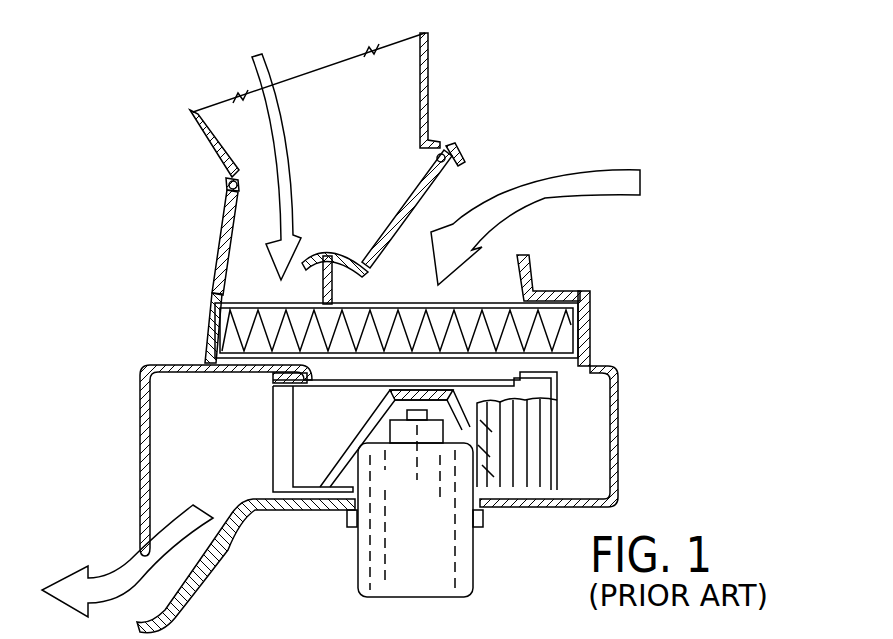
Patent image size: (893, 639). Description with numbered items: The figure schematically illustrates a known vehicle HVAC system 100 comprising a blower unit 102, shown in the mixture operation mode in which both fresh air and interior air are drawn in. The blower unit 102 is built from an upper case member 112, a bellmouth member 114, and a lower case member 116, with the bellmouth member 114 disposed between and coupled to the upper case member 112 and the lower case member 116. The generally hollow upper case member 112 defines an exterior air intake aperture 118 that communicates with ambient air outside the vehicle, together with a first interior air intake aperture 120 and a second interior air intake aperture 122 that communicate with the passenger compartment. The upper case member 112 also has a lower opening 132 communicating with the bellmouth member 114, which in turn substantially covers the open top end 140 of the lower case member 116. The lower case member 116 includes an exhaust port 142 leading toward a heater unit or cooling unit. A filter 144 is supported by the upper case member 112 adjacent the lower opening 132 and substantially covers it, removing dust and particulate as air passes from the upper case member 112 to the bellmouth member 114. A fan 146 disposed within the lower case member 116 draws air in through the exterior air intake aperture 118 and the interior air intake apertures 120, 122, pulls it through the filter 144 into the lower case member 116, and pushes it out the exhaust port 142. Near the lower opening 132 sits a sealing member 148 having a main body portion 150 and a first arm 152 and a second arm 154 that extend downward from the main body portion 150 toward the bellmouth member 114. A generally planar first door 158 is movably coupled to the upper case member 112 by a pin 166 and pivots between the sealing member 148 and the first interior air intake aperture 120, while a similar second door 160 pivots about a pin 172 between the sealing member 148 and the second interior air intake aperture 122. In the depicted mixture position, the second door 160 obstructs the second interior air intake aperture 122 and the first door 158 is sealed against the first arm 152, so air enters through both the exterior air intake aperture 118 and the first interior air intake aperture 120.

The vehicle HVAC system 100 is at (627, 118).
The blower unit 102 is at (634, 398).
The upper case member 112 is at (428, 78).
The bellmouth member 114 is at (592, 322).
The lower case member 116 is at (618, 457).
The exterior air intake aperture 118 is at (313, 78).
The first interior air intake aperture 120 is at (464, 184).
The second interior air intake aperture 122 is at (216, 216).
The lower opening 132 is at (473, 302).
The open top end 140 is at (333, 375).
The exhaust port 142 is at (145, 563).
The filter 144 is at (243, 332).
The fan 146 is at (565, 438).
The sealing member 148 is at (322, 250).
The main body portion 150 is at (332, 292).
The first arm 152 is at (351, 253).
The second arm 154 is at (285, 242).
The first door 158 is at (420, 172).
The second door 160 is at (212, 251).
The pin 166 is at (434, 157).
The pin 172 is at (218, 176).